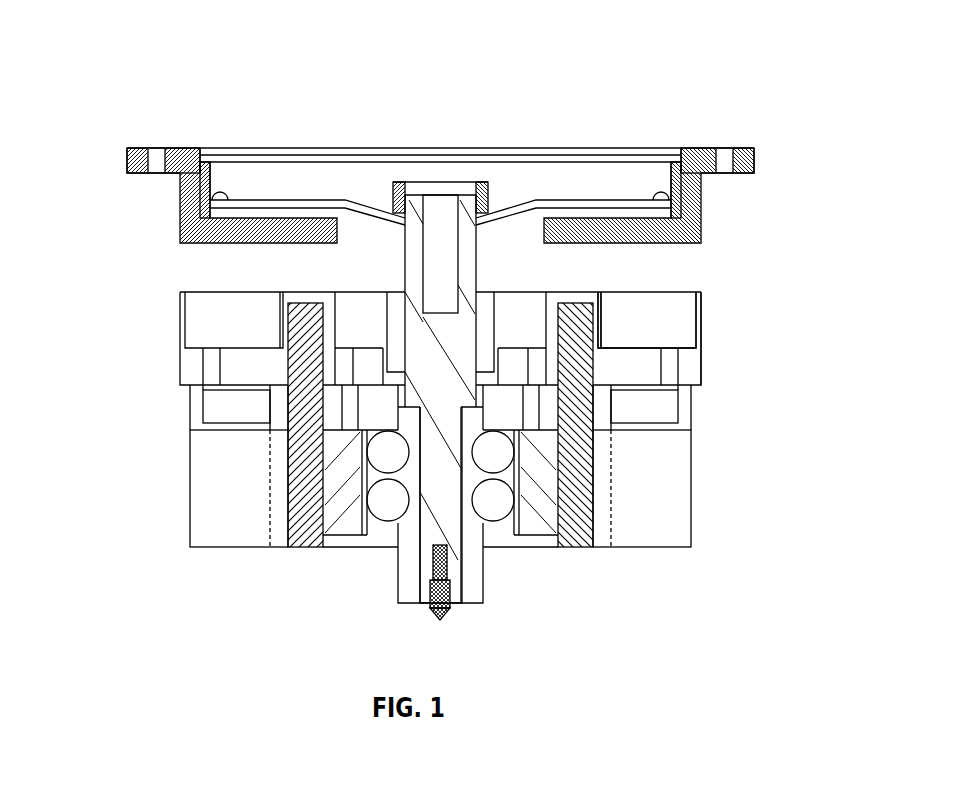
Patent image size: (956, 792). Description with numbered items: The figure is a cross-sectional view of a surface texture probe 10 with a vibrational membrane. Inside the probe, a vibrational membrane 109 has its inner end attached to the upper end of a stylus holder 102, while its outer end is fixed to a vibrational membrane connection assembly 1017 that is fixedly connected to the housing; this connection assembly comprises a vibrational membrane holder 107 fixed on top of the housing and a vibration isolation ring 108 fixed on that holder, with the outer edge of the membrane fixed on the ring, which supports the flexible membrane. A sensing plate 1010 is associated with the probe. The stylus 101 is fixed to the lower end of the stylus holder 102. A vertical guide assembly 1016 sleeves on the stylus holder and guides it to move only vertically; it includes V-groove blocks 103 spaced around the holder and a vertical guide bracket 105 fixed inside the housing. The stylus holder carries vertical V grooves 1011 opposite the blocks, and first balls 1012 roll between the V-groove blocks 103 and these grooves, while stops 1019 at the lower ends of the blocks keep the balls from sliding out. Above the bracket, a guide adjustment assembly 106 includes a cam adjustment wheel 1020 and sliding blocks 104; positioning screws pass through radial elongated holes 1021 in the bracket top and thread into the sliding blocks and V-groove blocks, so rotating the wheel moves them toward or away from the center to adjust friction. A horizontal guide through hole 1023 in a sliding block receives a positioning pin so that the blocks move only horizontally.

The probe 10 is at (617, 92).
The stylus 101 is at (450, 612).
The stylus holder 102 is at (437, 513).
The V-groove block 103 is at (280, 470).
The sliding block 104 is at (280, 407).
The vertical guide bracket 105 is at (197, 368).
The guide adjustment assembly 106 is at (196, 315).
The vibrational membrane holder 107 is at (130, 148).
The vibration isolation ring 108 is at (207, 192).
The vibrational membrane 109 is at (305, 208).
The sensing plate 1010 is at (422, 182).
The V groove 1011 is at (472, 425).
The first ball 1012 is at (495, 453).
The vertical guide assembly 1016 is at (675, 527).
The vibrational membrane connection assembly 1017 is at (185, 160).
The stop 1019 is at (420, 500).
The cam adjustment wheel 1020 is at (675, 298).
The radial elongated hole 1021 is at (642, 365).
The horizontal guide through hole 1023 is at (220, 403).